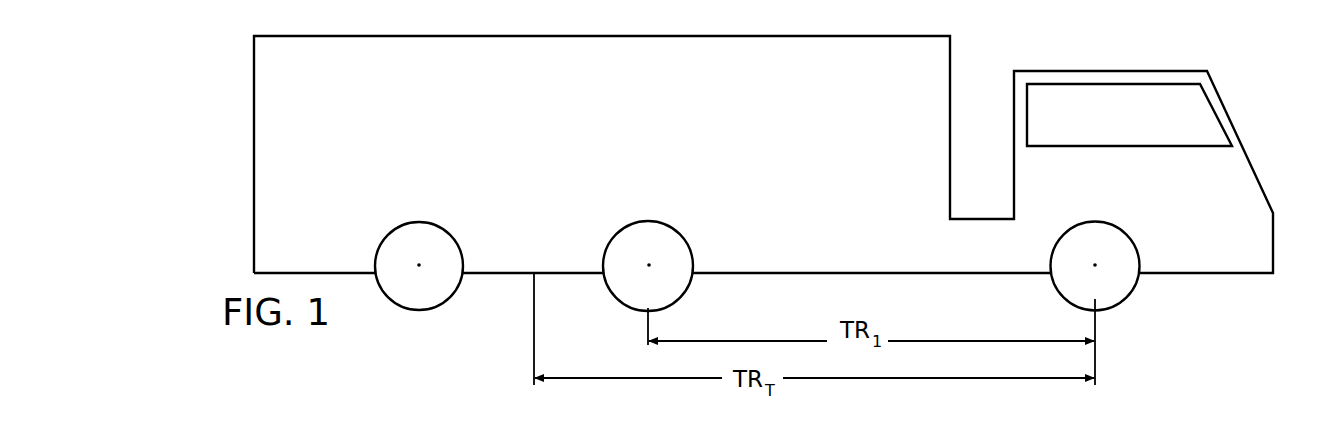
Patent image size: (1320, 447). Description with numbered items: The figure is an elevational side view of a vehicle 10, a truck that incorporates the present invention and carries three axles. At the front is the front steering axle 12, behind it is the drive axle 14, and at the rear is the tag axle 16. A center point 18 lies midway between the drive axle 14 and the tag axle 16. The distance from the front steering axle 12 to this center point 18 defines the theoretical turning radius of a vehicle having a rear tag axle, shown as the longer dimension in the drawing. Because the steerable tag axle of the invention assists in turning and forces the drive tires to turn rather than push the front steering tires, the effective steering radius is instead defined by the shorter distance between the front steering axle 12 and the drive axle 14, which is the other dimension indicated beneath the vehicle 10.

The vehicle 10 is at (230, 62).
The front steering axle 12 is at (1095, 265).
The drive axle 14 is at (649, 265).
The tag axle 16 is at (419, 265).
The center point 18 is at (534, 271).